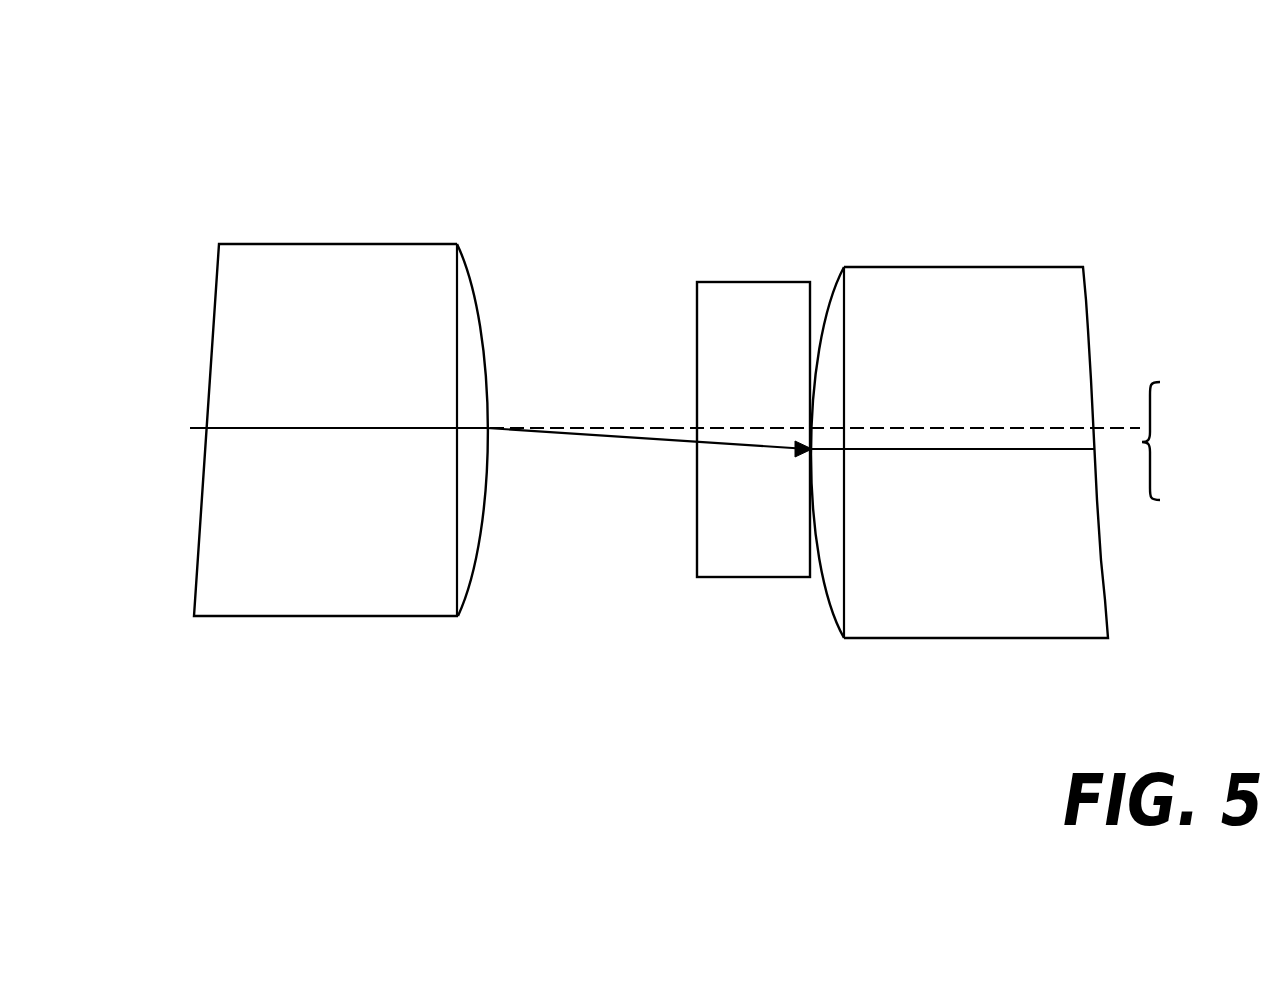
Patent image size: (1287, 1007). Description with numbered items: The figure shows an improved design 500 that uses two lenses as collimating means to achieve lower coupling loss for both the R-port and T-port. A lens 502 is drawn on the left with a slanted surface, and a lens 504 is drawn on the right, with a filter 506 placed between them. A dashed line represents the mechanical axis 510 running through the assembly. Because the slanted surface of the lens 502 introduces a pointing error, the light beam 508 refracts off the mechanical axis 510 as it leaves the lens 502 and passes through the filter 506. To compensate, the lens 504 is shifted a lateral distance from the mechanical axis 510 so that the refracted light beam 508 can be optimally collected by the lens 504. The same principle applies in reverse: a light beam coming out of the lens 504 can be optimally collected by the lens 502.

The improved design 500 is at (697, 377).
The lens 502 is at (341, 424).
The lens 504 is at (959, 441).
The filter 506 is at (751, 444).
The light beam 508 is at (630, 437).
The mechanical axis 510 is at (583, 423).